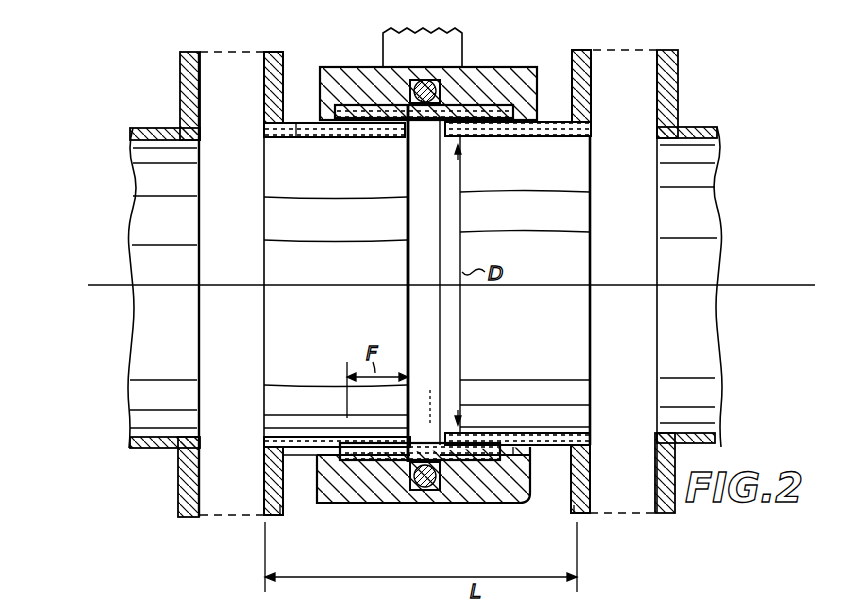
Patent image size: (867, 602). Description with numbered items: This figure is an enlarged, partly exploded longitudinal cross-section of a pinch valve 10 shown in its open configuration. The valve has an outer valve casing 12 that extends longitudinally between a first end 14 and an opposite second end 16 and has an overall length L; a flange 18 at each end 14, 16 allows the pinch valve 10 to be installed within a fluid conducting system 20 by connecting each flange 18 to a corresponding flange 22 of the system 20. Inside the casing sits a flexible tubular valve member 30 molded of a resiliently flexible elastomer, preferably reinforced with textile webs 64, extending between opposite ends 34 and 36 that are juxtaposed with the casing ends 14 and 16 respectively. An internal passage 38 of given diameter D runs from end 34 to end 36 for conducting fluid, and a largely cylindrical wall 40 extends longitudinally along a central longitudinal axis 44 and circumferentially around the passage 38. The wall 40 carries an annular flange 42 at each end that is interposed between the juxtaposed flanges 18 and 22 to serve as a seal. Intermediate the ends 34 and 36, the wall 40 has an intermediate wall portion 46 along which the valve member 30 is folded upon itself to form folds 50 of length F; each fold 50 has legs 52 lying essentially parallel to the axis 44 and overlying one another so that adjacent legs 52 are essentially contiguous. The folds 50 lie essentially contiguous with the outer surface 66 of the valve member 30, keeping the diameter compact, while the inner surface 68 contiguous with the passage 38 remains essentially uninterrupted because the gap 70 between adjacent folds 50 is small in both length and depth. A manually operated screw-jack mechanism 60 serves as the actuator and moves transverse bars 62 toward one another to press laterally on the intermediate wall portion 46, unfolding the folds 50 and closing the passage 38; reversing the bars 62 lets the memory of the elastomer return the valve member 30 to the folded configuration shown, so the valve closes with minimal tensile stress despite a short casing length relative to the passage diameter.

The pinch valve 10 is at (447, 502).
The outer valve casing 12 is at (473, 500).
The first end 14 is at (265, 517).
The second end 16 is at (577, 513).
The flange 18 is at (280, 507).
The fluid conducting system 20 is at (145, 127).
The flange 22 is at (182, 517).
The flexible tubular valve member 30 is at (262, 352).
The end 34 is at (264, 107).
The end 36 is at (588, 122).
The internal passage 38 is at (264, 410).
The wall 40 is at (575, 427).
The annular flange 42 is at (262, 490).
The central longitudinal axis 44 is at (297, 287).
The intermediate wall portion 46 is at (407, 200).
The folds 50 is at (343, 135).
The legs 52 is at (482, 442).
The screw-jack mechanism 60 is at (384, 50).
The transverse bars 62 is at (438, 95).
The webs 64 is at (555, 140).
The outer surface 66 is at (300, 118).
The inner surface 68 is at (325, 162).
The gap 70 is at (409, 310).